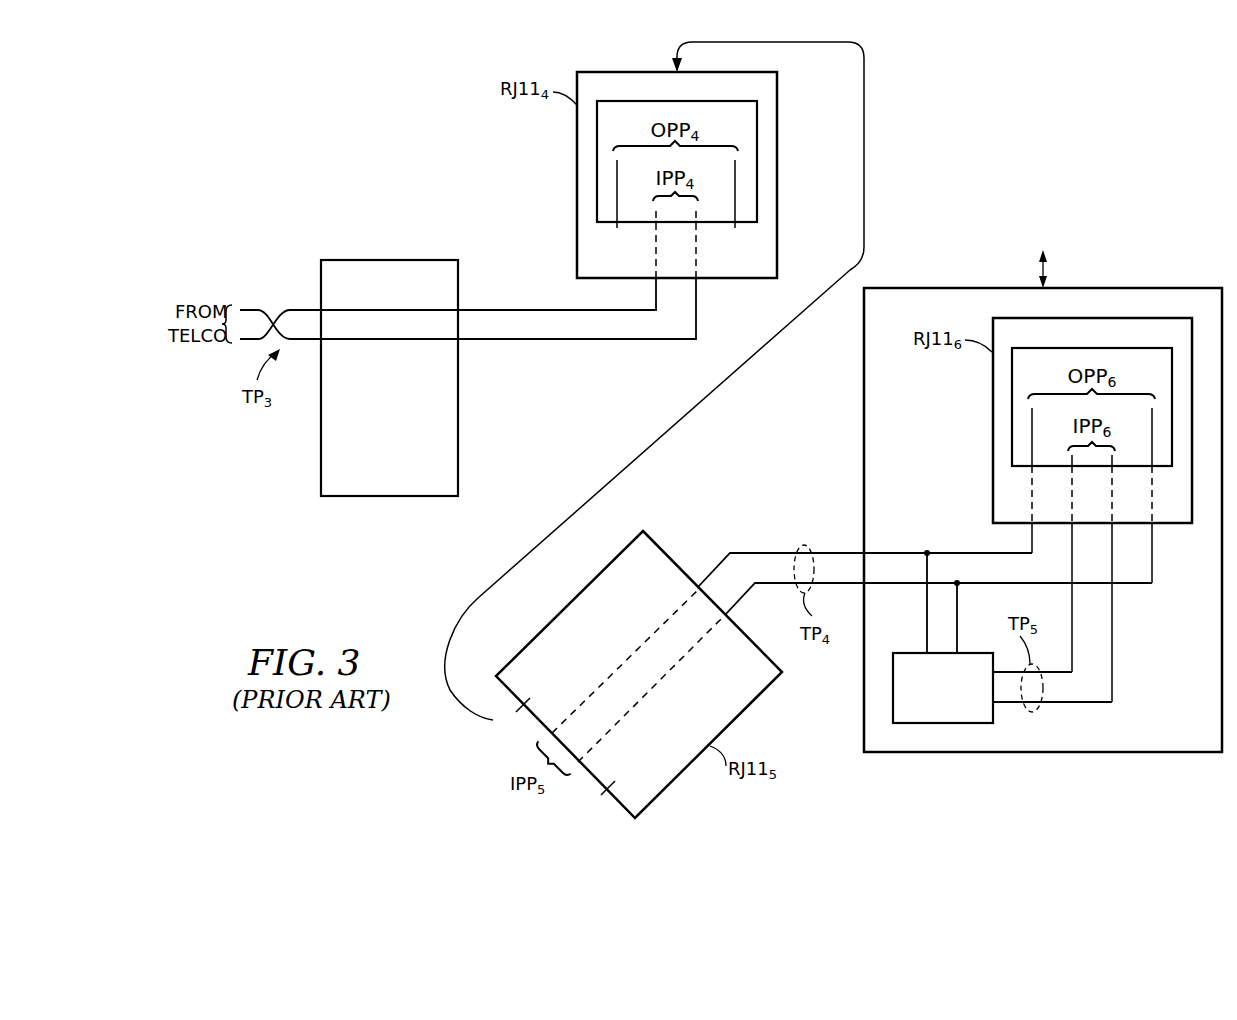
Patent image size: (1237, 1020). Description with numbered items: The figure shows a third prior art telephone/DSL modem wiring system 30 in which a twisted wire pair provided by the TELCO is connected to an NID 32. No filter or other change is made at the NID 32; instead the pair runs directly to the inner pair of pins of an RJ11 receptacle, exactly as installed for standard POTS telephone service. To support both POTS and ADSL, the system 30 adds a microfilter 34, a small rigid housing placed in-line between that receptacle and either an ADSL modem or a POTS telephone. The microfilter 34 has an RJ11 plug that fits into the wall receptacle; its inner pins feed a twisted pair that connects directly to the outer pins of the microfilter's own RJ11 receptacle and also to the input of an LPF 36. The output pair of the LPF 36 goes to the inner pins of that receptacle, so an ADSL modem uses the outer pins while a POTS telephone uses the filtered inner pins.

The telephone/DSL modem wiring system 30 is at (336, 130).
The NID 32 is at (390, 258).
The microfilter 34 is at (1152, 288).
The LPF 36 is at (931, 713).